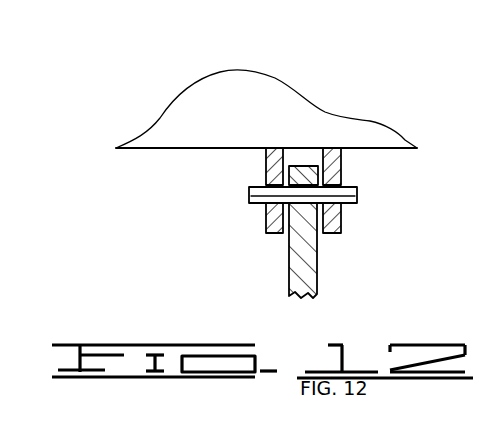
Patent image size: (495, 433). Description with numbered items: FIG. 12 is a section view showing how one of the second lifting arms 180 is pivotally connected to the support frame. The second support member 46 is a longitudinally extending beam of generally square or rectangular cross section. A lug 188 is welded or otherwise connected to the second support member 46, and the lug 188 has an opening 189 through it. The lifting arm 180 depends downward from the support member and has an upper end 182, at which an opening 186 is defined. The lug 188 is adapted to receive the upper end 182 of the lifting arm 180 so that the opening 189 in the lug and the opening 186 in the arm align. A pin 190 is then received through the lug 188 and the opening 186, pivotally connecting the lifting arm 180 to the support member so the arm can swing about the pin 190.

The second support member 46 is at (223, 97).
The second lifting arm 180 is at (317, 262).
The upper end 182 is at (300, 170).
The opening 186 is at (289, 250).
The lug 188 is at (342, 168).
The opening 189 is at (266, 178).
The pin 190 is at (249, 195).